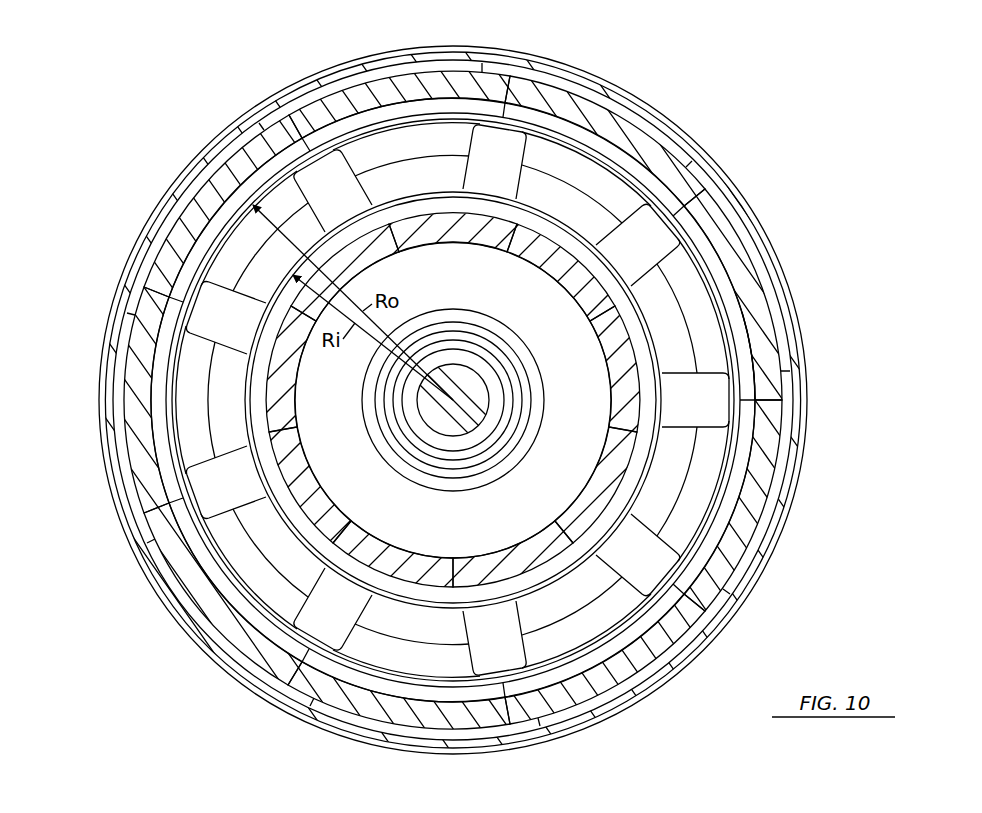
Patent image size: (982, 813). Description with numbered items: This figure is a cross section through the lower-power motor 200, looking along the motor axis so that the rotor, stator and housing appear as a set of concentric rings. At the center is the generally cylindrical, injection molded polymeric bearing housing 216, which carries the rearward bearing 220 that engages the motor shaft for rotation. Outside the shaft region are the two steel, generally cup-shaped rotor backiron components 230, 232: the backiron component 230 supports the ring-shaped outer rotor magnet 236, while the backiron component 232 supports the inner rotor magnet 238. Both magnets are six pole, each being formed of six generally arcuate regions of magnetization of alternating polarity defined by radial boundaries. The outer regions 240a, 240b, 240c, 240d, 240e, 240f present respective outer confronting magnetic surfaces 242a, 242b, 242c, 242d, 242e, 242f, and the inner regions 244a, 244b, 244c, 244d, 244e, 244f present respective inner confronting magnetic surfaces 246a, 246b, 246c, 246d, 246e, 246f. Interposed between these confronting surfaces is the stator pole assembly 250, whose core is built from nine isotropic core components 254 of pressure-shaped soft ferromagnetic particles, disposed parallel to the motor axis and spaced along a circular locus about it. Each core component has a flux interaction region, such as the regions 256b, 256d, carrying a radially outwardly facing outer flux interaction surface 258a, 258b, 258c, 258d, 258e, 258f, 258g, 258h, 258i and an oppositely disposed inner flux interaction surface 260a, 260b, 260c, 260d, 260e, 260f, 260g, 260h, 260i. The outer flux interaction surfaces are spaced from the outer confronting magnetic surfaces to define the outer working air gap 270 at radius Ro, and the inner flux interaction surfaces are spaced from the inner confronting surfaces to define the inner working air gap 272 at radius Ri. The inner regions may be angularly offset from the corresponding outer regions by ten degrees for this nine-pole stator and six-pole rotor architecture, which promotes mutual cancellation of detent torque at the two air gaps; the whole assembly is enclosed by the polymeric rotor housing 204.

The motor 200 is at (767, 115).
The rotor housing 204 is at (497, 58).
The bearing housing 216 is at (527, 357).
The rearward bearing 220 is at (472, 358).
The rotor backiron component 230 is at (167, 565).
The rotor backiron component 232 is at (345, 518).
The outer rotor magnet 236 is at (748, 468).
The inner rotor magnet 238 is at (650, 432).
The outer region of magnetization 240a is at (723, 192).
The outer region of magnetization 240b is at (313, 142).
The outer region of magnetization 240c is at (163, 358).
The outer region of magnetization 240d is at (290, 673).
The outer region of magnetization 240e is at (723, 640).
The outer region of magnetization 240f is at (800, 460).
The outer confronting magnetic surface 242a is at (660, 198).
The outer confronting magnetic surface 242b is at (300, 158).
The outer confronting magnetic surface 242c is at (177, 457).
The outer confronting magnetic surface 242d is at (277, 635).
The outer confronting magnetic surface 242e is at (533, 690).
The outer confronting magnetic surface 242f is at (803, 409).
The inner region of magnetization 244a is at (492, 207).
The inner region of magnetization 244b is at (270, 165).
The inner region of magnetization 244c is at (177, 503).
The inner region of magnetization 244d is at (424, 595).
The inner region of magnetization 244e is at (740, 591).
The inner region of magnetization 244f is at (805, 368).
The inner confronting magnetic surface 246a is at (600, 105).
The inner confronting magnetic surface 246b is at (203, 228).
The inner confronting magnetic surface 246c is at (177, 384).
The inner confronting magnetic surface 246d is at (320, 700).
The inner confronting magnetic surface 246e is at (740, 561).
The inner confronting magnetic surface 246f is at (806, 332).
The stator pole assembly 250 is at (258, 573).
The core component 254 is at (302, 800).
The flux interaction region 256b is at (433, 796).
The flux interaction region 256d is at (200, 800).
The outer flux interaction surface 258a is at (768, 302).
The outer flux interaction surface 258b is at (618, 135).
The outer flux interaction surface 258c is at (398, 73).
The outer flux interaction surface 258d is at (227, 192).
The outer flux interaction surface 258e is at (127, 415).
The outer flux interaction surface 258f is at (210, 632).
The outer flux interaction surface 258g is at (350, 758).
The outer flux interaction surface 258h is at (587, 690).
The outer flux interaction surface 258i is at (790, 520).
The inner flux interaction surface 260a is at (633, 318).
The inner flux interaction surface 260b is at (556, 276).
The inner flux interaction surface 260c is at (418, 245).
The inner flux interaction surface 260d is at (340, 258).
The inner flux interaction surface 260e is at (272, 381).
The inner flux interaction surface 260f is at (307, 490).
The inner flux interaction surface 260g is at (408, 597).
The inner flux interaction surface 260h is at (570, 572).
The inner flux interaction surface 260i is at (633, 463).
The outer working air gap 270 is at (790, 432).
The inner working air gap 272 is at (653, 385).